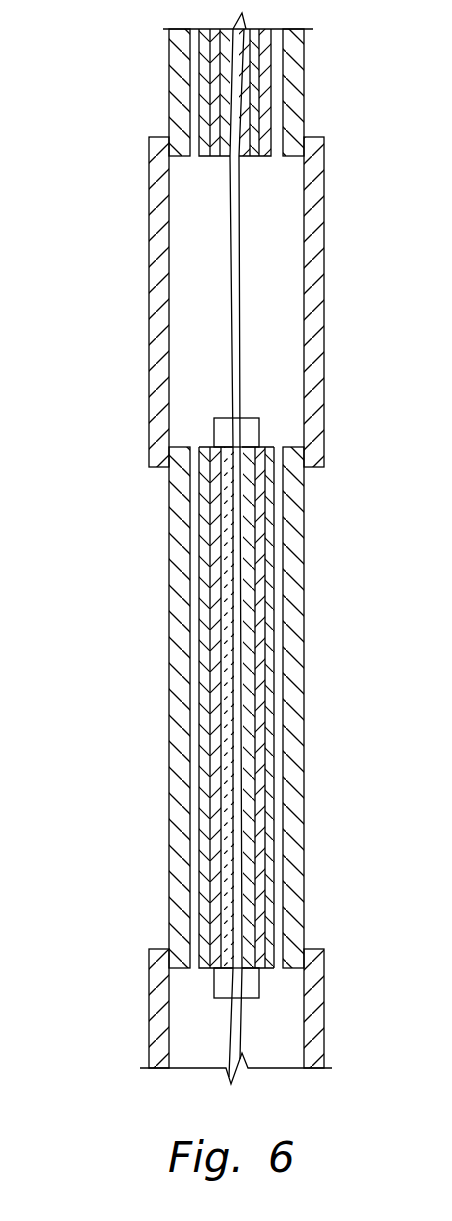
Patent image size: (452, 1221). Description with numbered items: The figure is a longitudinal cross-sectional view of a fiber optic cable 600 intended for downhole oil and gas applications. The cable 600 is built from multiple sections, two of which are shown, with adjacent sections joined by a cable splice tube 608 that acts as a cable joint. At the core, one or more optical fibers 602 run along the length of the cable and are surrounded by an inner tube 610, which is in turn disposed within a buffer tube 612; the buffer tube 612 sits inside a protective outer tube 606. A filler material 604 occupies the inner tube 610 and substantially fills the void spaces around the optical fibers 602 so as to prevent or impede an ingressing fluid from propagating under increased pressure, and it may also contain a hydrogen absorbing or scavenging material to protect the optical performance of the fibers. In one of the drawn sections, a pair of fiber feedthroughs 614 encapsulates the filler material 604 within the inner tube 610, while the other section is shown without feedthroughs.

The fiber optic cable 600 is at (108, 51).
The optical fibers 602 is at (236, 254).
The filler material 604 is at (223, 693).
The protective outer tube 606 is at (298, 601).
The cable splice tube 608 is at (316, 337).
The inner tube 610 is at (257, 773).
The buffer tube 612 is at (270, 853).
The fiber feedthroughs 614 is at (250, 431).